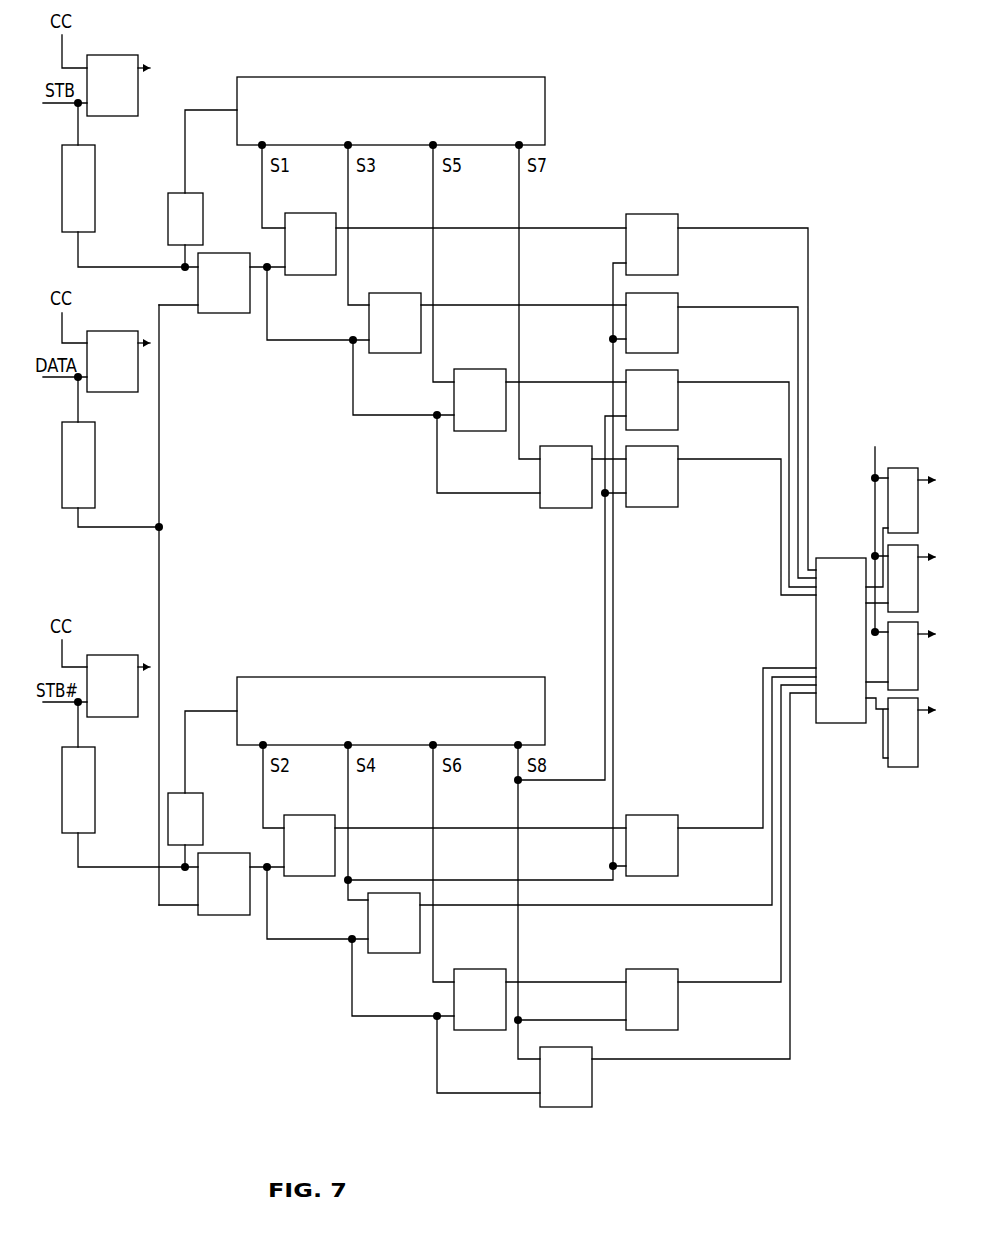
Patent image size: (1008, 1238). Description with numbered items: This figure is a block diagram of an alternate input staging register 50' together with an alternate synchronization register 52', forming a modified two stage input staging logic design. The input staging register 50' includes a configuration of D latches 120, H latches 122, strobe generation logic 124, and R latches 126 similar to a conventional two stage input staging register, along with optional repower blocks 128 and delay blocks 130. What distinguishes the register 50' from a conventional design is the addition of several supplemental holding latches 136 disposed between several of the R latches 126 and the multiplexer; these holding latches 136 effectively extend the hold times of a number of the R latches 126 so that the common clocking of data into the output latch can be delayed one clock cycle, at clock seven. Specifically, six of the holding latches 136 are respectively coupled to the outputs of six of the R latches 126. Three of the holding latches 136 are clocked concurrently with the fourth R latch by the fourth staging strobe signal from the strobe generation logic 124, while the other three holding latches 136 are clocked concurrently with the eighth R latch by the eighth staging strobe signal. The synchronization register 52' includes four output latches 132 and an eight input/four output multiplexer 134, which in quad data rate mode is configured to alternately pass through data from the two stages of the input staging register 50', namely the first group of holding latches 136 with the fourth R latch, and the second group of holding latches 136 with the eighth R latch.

The alternate input staging register 50' is at (490, 565).
The alternate synchronization register 52' is at (877, 568).
The D latches 120 is at (113, 55).
The H latches 122 is at (213, 313).
The strobe generation logic 124 is at (460, 77).
The R latches 126 is at (300, 275).
The repower blocks 128 is at (96, 203).
The delay blocks 130 is at (168, 238).
The H3 latches 132 is at (895, 468).
The M1 multiplexer 134 is at (832, 558).
The supplemental holding latches 136 is at (678, 265).